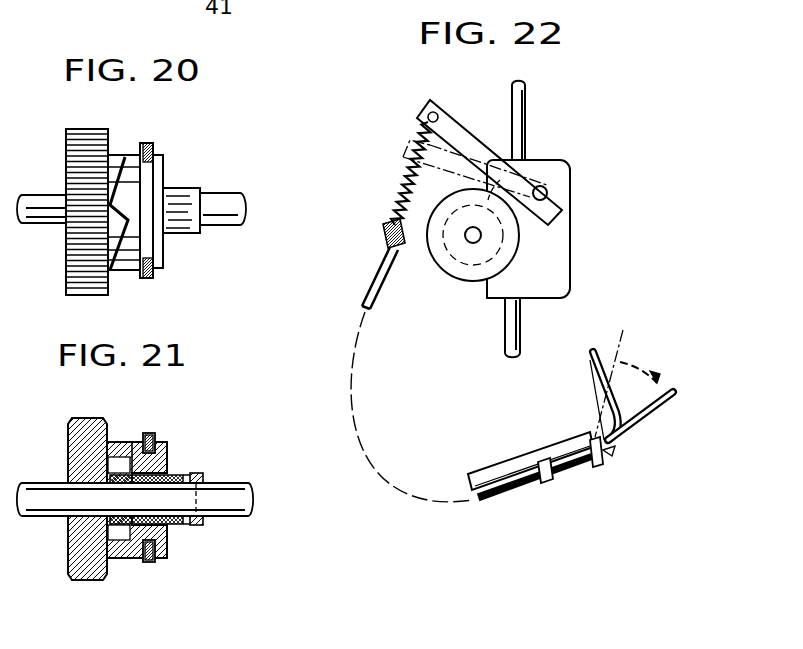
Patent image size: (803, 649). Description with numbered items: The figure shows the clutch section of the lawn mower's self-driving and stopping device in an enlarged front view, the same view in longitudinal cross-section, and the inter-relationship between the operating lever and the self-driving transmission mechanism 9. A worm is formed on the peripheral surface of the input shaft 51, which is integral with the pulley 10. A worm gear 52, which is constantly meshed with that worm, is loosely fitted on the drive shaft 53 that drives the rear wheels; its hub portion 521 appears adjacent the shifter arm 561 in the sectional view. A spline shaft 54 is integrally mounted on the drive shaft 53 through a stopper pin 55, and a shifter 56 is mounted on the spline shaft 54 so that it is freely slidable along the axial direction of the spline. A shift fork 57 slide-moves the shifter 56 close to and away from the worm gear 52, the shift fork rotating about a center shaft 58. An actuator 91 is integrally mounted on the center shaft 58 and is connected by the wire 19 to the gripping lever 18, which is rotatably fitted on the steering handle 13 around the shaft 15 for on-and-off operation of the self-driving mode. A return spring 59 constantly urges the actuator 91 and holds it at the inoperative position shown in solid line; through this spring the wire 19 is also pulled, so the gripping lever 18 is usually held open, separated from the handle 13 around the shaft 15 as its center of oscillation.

In FIG. 20, the worm gear 52 is at (66, 144).
In FIG. 21, the worm gear 52 is at (77, 559).
In FIG. 20, the gear hub 521 is at (115, 221).
In FIG. 21, the gear hub 521 is at (113, 442).
In FIG. 20, the drive shaft 53 is at (38, 195).
In FIG. 21, the drive shaft 53 is at (52, 484).
In FIG. 22, the drive shaft 53 is at (527, 102).
In FIG. 20, the spline shaft 54 is at (200, 190).
In FIG. 21, the spline shaft 54 is at (177, 476).
In FIG. 21, the stopper pin 55 is at (198, 471).
In FIG. 20, the shifter 56 is at (128, 270).
In FIG. 21, the shifter 56 is at (167, 523).
In FIG. 20, the spring arm 561 is at (133, 196).
In FIG. 21, the spring arm 561 is at (139, 444).
In FIG. 20, the shift fork 57 is at (148, 143).
In FIG. 21, the shift fork 57 is at (155, 440).
In FIG. 22, the self-driving transmission mechanism 9 is at (555, 232).
In FIG. 22, the pulley 10 is at (437, 260).
In FIG. 22, the input shaft 51 is at (470, 245).
In FIG. 22, the center shaft 58 is at (542, 185).
In FIG. 22, the return spring 59 is at (404, 176).
In FIG. 22, the actuator 91 is at (458, 121).
In FIG. 22, the steering handle 13 is at (592, 362).
In FIG. 22, the shaft 15 is at (590, 436).
In FIG. 22, the gripping lever 18 is at (622, 347).
In FIG. 22, the wire 19 is at (393, 466).